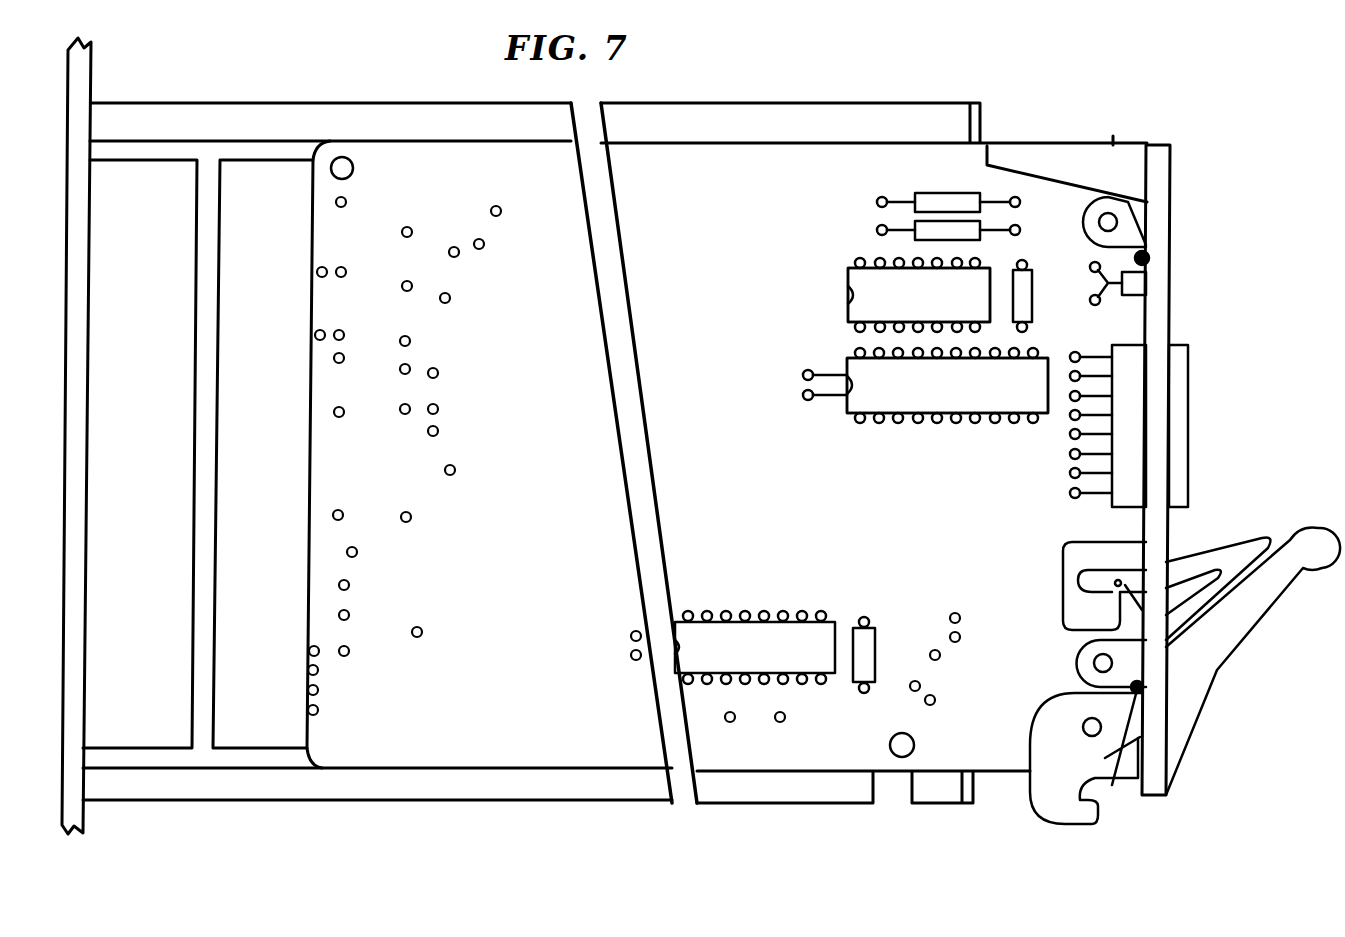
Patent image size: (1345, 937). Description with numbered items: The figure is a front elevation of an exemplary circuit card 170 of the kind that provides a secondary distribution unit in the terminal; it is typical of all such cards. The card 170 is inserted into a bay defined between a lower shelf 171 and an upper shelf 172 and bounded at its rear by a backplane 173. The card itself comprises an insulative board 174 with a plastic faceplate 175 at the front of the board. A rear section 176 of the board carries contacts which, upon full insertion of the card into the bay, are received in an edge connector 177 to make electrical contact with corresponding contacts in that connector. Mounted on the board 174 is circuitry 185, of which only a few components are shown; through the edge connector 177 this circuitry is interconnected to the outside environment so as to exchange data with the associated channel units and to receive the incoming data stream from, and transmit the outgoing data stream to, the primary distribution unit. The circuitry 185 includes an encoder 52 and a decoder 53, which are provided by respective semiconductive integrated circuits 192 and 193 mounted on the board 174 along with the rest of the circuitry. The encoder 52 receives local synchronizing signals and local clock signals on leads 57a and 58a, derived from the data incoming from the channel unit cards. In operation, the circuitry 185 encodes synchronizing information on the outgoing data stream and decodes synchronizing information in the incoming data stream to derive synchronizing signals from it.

The card 170 is at (1220, 297).
The lower shelf 171 is at (300, 790).
The upper shelf 172 is at (370, 103).
The backplane 173 is at (93, 80).
The insulative board 174 is at (500, 578).
The plastic faceplate 175 is at (1163, 227).
The rear section 176 is at (297, 478).
The edge connector 177 is at (138, 477).
The circuitry 185 is at (930, 196).
The decoder 53 is at (848, 271).
The semiconductive integrated circuit 193 is at (848, 308).
The encoder 52 is at (965, 420).
The semiconductive integrated circuit 192 is at (898, 400).
The lead 57a is at (820, 372).
The lead 58a is at (818, 398).